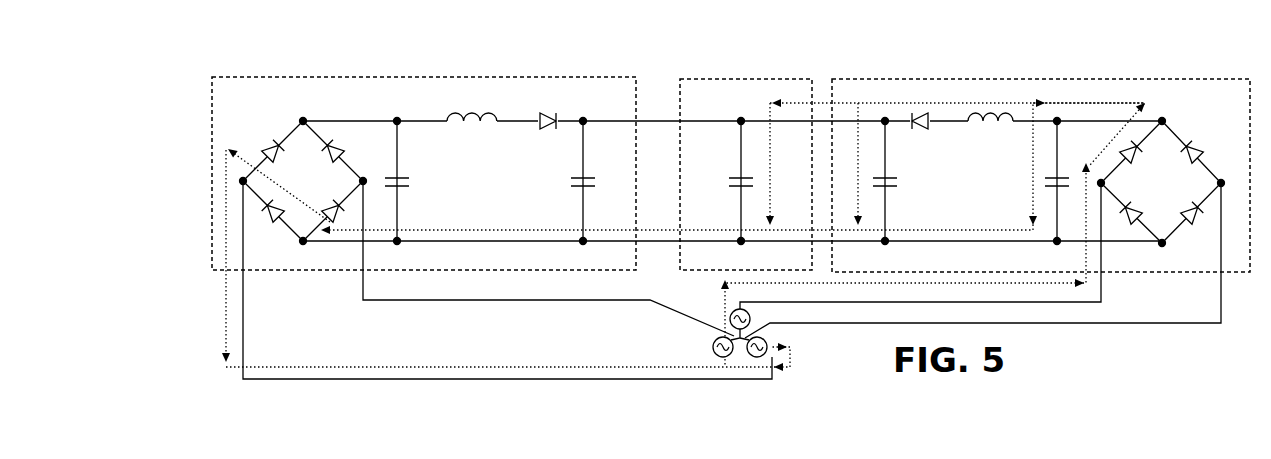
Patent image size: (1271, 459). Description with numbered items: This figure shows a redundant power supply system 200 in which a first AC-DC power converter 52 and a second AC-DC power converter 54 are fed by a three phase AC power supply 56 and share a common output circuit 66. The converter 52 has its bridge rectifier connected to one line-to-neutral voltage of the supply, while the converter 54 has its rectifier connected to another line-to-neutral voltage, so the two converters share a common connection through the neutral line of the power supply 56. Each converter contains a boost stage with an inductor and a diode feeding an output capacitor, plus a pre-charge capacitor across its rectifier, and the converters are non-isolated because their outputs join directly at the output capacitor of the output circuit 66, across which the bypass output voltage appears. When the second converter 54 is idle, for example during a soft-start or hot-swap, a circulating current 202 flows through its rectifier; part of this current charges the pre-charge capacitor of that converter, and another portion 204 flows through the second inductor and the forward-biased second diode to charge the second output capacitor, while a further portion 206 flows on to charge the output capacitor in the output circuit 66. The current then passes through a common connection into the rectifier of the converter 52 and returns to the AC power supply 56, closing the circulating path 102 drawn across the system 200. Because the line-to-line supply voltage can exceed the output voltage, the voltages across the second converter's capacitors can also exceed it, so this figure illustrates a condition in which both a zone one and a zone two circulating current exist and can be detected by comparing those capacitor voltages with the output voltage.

The power supply system 200 is at (268, 58).
The first AC-DC power converter 52 is at (420, 76).
The second AC-DC power converter 54 is at (1150, 78).
The AC power supply 56 is at (703, 334).
The output circuit 66 is at (710, 78).
The current path 102 is at (523, 215).
The circulating current 202 is at (1082, 90).
The circulating current portion 204 is at (960, 92).
The circulating current portion 206 is at (820, 95).